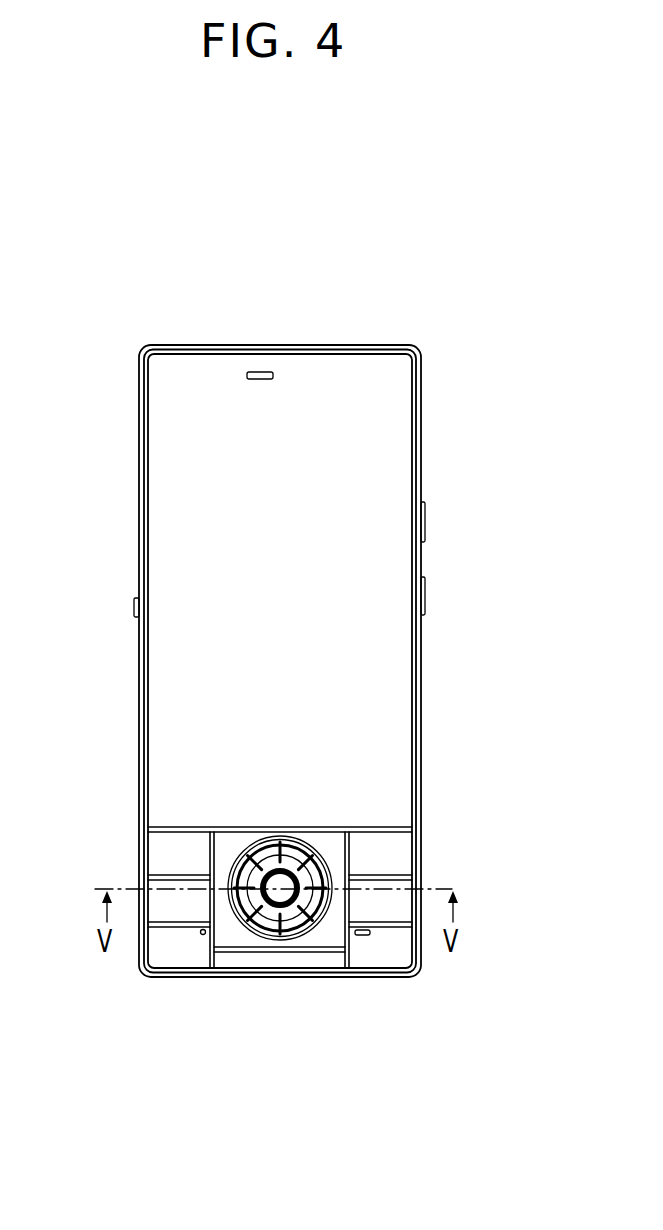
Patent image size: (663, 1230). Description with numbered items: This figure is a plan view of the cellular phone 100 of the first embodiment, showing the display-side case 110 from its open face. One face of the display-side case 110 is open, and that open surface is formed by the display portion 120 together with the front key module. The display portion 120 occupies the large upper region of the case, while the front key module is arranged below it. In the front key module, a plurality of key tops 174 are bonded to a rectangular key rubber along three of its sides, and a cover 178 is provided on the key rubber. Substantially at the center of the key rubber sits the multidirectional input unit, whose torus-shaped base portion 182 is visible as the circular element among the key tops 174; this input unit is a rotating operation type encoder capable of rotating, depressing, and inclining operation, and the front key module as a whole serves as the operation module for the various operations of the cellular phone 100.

The cellular phone 100 is at (95, 371).
The display-side case 110 is at (420, 693).
The display portion 120 is at (392, 468).
The key tops 174 is at (290, 886).
The cover 178 is at (327, 937).
The base portion 182 is at (260, 935).